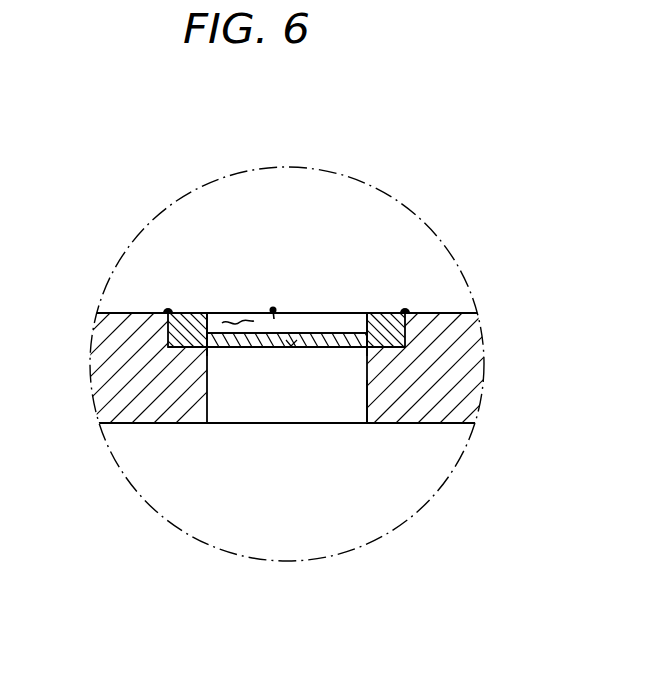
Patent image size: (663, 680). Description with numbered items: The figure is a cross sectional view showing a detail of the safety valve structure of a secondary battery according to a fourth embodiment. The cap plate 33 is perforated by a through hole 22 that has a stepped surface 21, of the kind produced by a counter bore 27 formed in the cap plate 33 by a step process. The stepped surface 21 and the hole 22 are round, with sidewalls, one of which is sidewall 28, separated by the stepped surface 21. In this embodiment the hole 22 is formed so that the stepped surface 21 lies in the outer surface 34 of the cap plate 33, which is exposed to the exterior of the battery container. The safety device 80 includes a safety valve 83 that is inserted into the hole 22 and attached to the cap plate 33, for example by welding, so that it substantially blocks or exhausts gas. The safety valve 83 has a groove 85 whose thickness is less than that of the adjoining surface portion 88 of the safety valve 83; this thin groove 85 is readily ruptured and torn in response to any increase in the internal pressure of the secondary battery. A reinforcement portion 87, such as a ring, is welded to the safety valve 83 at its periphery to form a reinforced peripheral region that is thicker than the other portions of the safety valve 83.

The stepped surface 21 is at (173, 350).
The through hole 22 is at (307, 400).
The counter bore 27 is at (235, 322).
The sidewall 28 is at (368, 420).
The cap plate 33 is at (115, 398).
The outer surface 34 is at (437, 313).
The safety device 80 is at (272, 306).
The safety valve 83 is at (325, 333).
The groove 85 is at (290, 350).
The reinforcement portion 87 is at (188, 313).
The surface portion 88 is at (335, 333).